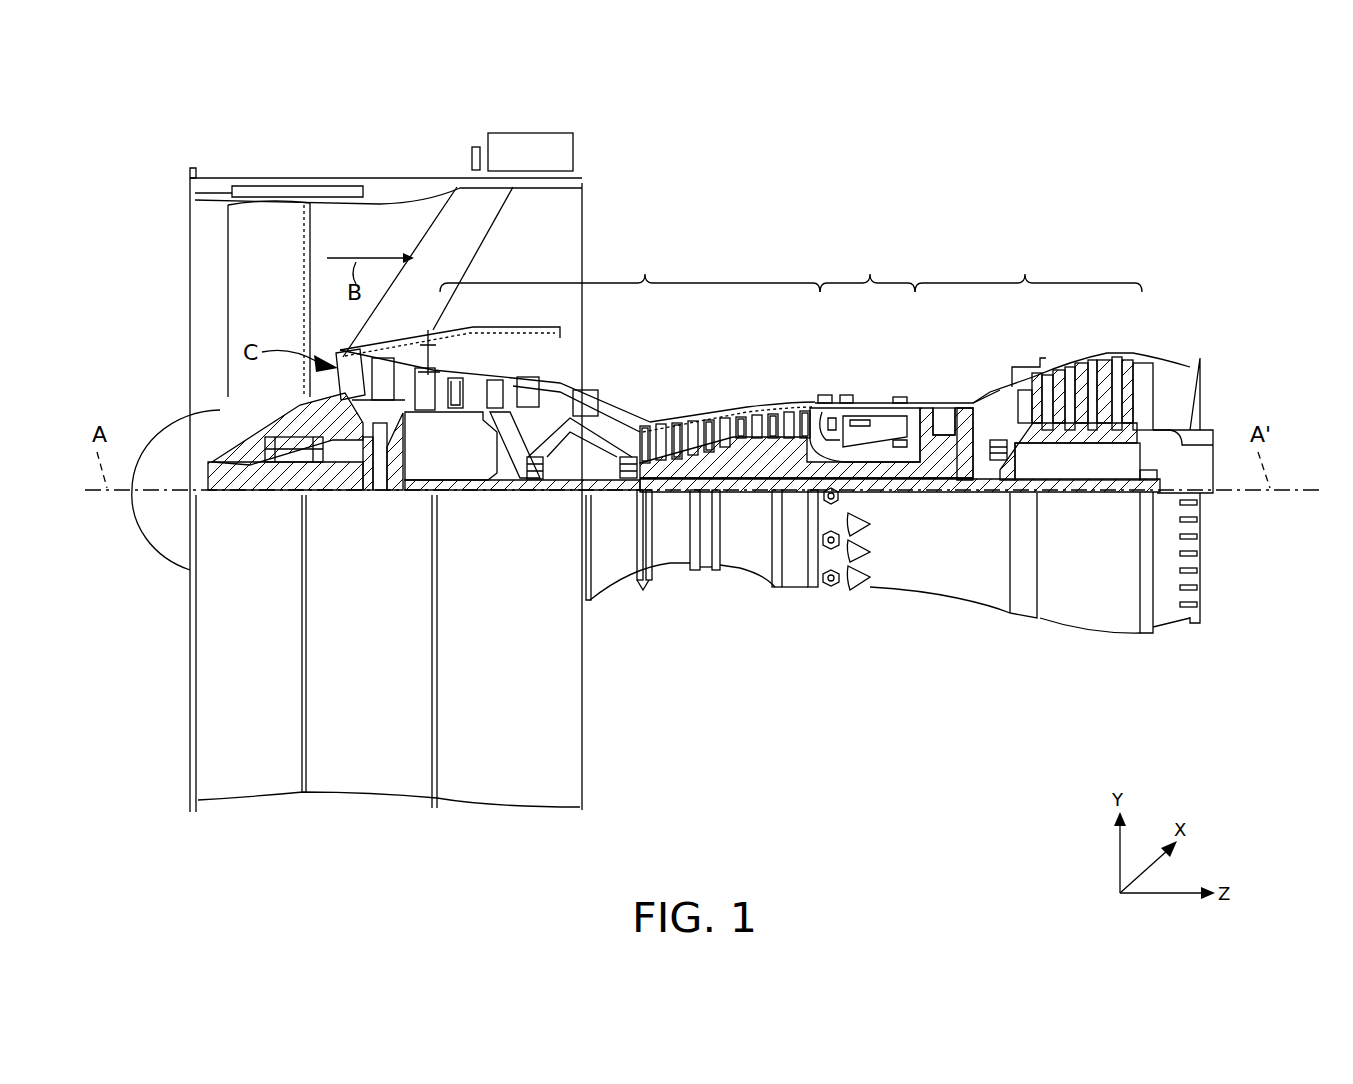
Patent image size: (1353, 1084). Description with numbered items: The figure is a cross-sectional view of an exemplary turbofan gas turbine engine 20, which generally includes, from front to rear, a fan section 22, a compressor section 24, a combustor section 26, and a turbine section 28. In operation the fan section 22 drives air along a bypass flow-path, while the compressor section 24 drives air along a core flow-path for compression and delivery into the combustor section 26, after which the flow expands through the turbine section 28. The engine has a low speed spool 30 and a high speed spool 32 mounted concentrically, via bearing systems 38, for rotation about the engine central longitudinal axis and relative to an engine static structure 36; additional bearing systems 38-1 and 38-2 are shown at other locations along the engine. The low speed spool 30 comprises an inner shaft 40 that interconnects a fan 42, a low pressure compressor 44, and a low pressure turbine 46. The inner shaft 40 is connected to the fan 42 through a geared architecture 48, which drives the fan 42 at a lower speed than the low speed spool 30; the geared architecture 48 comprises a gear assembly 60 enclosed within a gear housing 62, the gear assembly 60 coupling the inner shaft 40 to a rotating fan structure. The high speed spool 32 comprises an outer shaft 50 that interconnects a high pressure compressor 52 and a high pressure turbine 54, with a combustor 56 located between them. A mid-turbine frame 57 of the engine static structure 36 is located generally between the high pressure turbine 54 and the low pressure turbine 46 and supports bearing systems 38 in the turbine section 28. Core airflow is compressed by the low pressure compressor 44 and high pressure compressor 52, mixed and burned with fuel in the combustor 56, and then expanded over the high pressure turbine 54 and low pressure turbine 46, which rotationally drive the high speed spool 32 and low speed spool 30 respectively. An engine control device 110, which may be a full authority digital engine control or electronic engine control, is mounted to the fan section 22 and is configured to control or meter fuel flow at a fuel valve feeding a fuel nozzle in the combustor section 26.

The gas turbine engine 20 is at (920, 208).
The fan section 22 is at (432, 158).
The compressor section 24 is at (630, 267).
The combustor section 26 is at (867, 267).
The turbine section 28 is at (1028, 267).
The low speed spool 30 is at (755, 506).
The high speed spool 32 is at (798, 458).
The engine static structure 36 is at (957, 570).
The bearing system 38 is at (986, 460).
The bearing system 38-1 is at (282, 467).
The bearing system 38-2 is at (537, 482).
The inner shaft 40 is at (604, 493).
The fan 42 is at (277, 302).
The low pressure compressor 44 is at (555, 386).
The low pressure turbine 46 is at (1077, 377).
The geared architecture 48 is at (396, 506).
The outer shaft 50 is at (863, 473).
The high pressure compressor 52 is at (727, 432).
The high pressure turbine 54 is at (937, 416).
The combustor 56 is at (868, 428).
The mid-turbine frame 57 is at (982, 458).
The gear assembly 60 is at (401, 470).
The gear housing 62 is at (399, 431).
The engine control device 110 is at (523, 160).